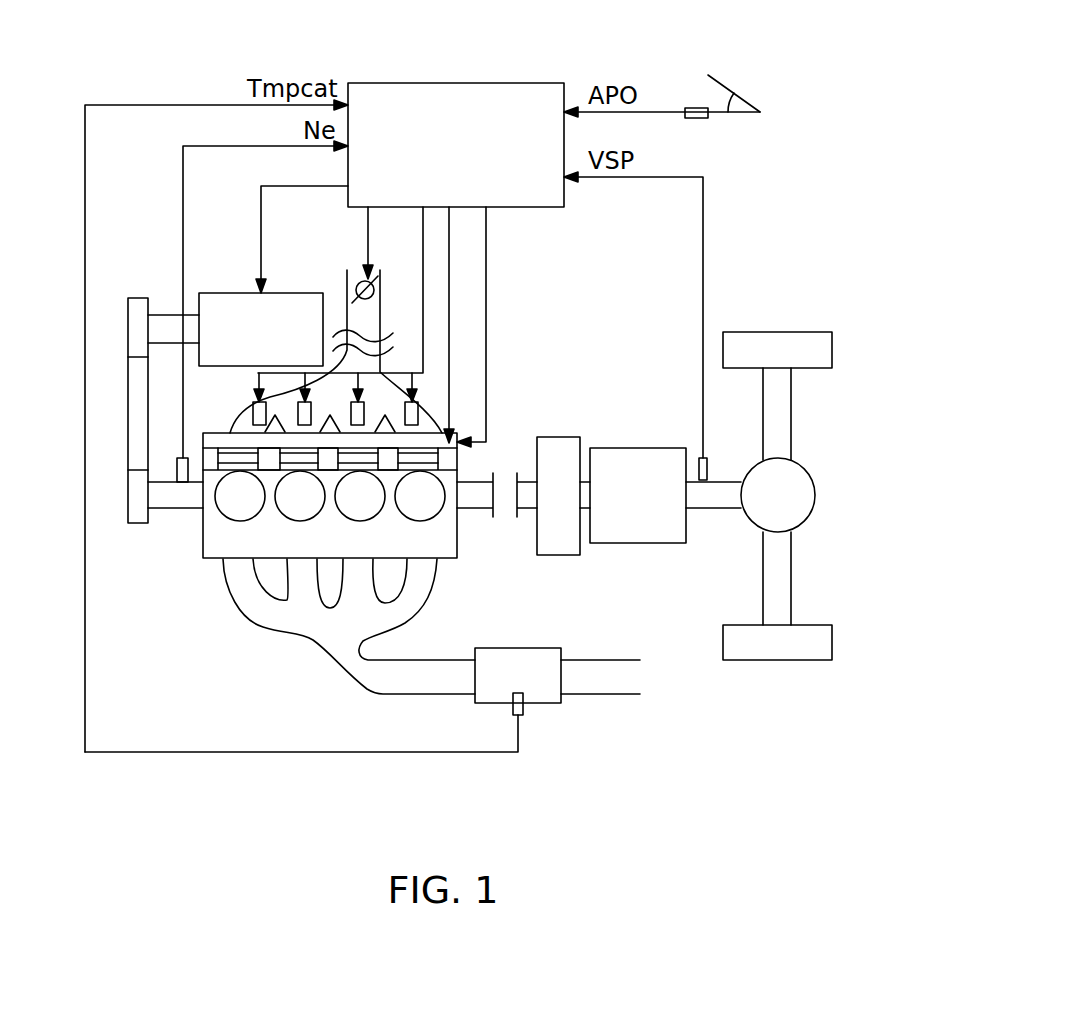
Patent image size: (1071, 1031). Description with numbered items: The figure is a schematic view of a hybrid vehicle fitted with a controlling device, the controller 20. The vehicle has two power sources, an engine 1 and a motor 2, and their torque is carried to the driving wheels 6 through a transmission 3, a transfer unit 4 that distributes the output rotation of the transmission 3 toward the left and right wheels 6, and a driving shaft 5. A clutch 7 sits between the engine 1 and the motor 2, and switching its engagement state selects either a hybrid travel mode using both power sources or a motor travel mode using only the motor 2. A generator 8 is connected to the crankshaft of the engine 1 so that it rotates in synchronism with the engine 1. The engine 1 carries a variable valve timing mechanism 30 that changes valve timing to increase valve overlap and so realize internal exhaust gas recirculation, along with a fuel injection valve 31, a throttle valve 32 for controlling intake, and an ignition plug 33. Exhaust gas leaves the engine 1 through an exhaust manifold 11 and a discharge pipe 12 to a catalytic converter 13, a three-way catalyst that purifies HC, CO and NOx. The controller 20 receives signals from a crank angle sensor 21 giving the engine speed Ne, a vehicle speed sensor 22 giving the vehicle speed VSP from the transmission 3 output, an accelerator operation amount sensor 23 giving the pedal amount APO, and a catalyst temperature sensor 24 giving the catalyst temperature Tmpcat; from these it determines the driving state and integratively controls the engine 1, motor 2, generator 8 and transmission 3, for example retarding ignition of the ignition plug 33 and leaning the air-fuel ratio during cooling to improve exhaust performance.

The engine 1 is at (457, 520).
The motor 2 is at (560, 437).
The transmission 3 is at (640, 448).
The transfer unit 4 is at (815, 495).
The driving shaft 5 is at (791, 415).
The driving wheels 6 is at (832, 350).
The clutch 7 is at (503, 480).
The generator 8 is at (236, 293).
The exhaust manifold 11 is at (250, 618).
The discharge pipe 12 is at (387, 694).
The catalytic converter 13 is at (517, 648).
The controller 20 is at (457, 83).
The crank angle sensor 21 is at (173, 470).
The vehicle speed sensor 22 is at (709, 470).
The accelerator operation amount sensor 23 is at (698, 118).
The catalyst temperature sensor 24 is at (524, 710).
The variable valve timing mechanism 30 is at (257, 453).
The fuel injection valve 31 is at (250, 412).
The throttle valve 32 is at (360, 283).
The ignition plug 33 is at (242, 496).